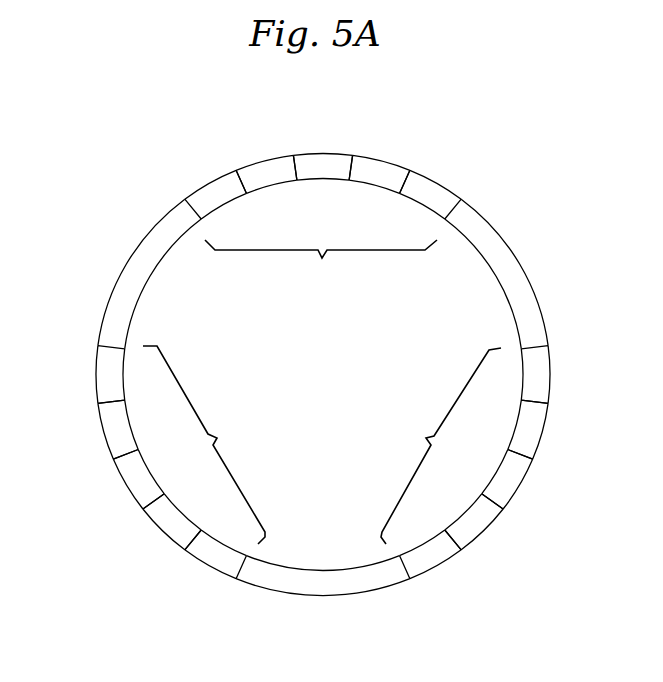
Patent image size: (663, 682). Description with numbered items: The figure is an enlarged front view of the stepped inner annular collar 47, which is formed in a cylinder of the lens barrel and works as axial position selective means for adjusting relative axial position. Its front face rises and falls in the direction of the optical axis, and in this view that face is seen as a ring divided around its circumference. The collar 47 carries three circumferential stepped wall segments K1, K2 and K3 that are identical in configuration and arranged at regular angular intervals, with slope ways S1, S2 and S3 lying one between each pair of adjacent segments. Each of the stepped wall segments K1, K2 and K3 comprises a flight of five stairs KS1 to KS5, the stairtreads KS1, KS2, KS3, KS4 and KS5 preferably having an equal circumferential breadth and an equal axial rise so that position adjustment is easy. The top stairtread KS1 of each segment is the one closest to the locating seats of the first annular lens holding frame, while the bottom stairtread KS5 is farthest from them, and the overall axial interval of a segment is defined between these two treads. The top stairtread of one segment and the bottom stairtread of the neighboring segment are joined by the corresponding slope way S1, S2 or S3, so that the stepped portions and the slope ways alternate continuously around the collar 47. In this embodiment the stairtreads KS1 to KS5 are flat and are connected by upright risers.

The stepped inner annular collar 47 is at (544, 212).
The slope way S1 is at (507, 275).
The slope way S2 is at (324, 588).
The slope way S3 is at (130, 285).
The top stairtread KS1 is at (217, 190).
The stairtread KS2 is at (268, 169).
The stairtread KS3 is at (323, 162).
The stairtread KS4 is at (378, 169).
The bottom stairtread KS5 is at (430, 190).
The circumferential stepped wall segment K1 is at (441, 446).
The circumferential stepped wall segment K2 is at (204, 445).
The circumferential stepped wall segment K3 is at (321, 264).